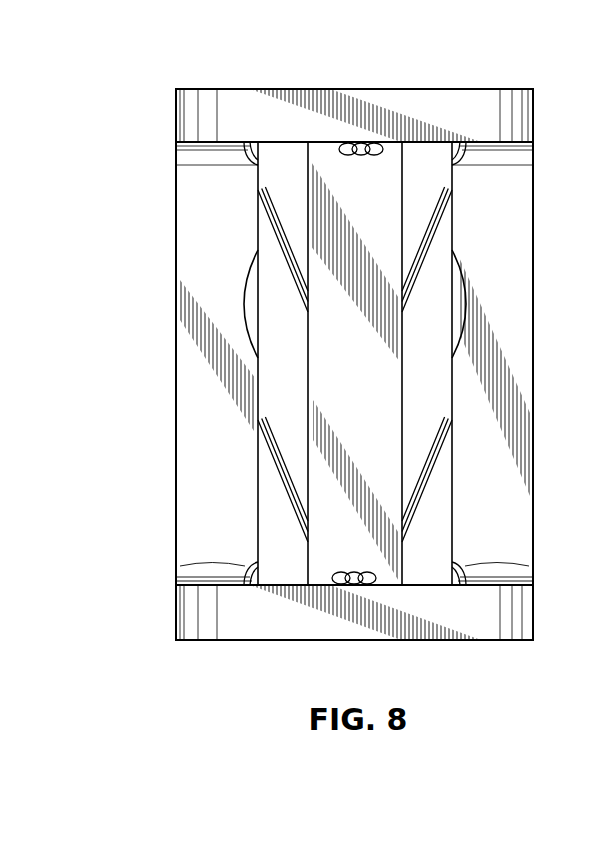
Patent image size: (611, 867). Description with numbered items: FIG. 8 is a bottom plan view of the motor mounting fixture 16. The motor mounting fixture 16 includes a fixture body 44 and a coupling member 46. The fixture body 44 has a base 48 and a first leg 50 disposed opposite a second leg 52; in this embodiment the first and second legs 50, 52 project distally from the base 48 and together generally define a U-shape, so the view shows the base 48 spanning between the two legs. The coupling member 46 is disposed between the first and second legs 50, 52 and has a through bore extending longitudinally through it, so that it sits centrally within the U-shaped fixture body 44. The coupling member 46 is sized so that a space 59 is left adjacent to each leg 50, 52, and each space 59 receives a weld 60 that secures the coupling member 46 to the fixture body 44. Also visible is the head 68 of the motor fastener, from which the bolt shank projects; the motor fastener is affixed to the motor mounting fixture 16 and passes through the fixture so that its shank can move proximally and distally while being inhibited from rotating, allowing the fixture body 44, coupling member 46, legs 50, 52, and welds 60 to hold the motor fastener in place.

The motor mounting fixture 16 is at (176, 62).
The fixture body 44 is at (170, 271).
The coupling member 46 is at (345, 388).
The base 48 is at (209, 233).
The first leg 50 is at (512, 123).
The second leg 52 is at (512, 616).
The space 59 is at (411, 140).
The weld 60 is at (356, 141).
The head 68 is at (458, 298).